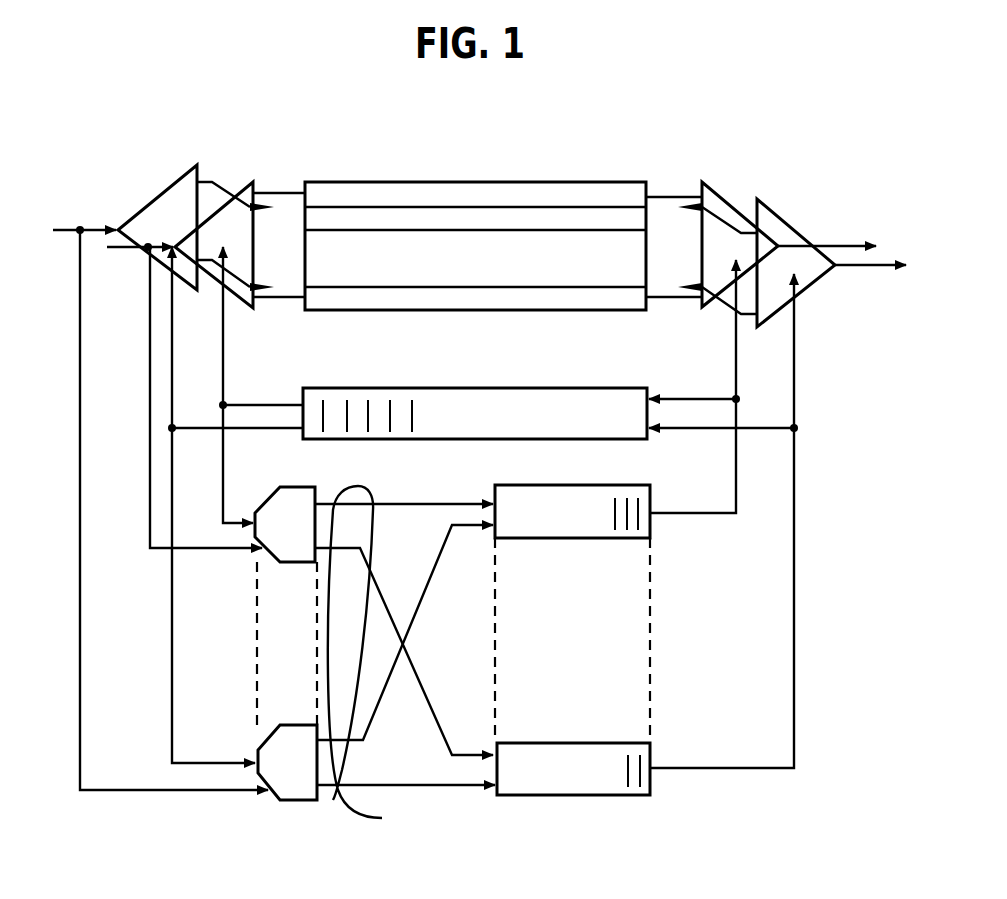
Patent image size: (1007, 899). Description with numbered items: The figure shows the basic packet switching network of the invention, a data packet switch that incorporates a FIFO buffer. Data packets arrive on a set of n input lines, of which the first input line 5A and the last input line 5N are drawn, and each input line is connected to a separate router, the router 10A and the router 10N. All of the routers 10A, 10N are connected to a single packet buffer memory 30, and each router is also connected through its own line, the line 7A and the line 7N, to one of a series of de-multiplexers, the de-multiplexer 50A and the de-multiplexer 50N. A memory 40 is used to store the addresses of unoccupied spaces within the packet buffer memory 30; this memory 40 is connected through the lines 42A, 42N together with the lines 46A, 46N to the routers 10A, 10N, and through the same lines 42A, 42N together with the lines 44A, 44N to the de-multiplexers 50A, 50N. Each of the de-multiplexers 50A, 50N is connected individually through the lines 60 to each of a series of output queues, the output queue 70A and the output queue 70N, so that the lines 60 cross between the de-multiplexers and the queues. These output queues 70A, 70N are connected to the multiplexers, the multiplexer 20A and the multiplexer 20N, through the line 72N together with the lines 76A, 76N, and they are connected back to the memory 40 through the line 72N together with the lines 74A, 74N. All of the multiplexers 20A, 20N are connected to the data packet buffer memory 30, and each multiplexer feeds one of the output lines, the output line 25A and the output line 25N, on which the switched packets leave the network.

The input line 5N is at (71, 228).
The input line 5A is at (112, 248).
The line 7N is at (83, 762).
The line 7A is at (150, 478).
The router 10N is at (177, 182).
The router 10A is at (255, 186).
The packet buffer memory 30 is at (542, 181).
The multiplexer 20A is at (723, 192).
The multiplexer 20N is at (793, 225).
The output line 25A is at (845, 245).
The output line 25N is at (866, 267).
The memory 40 is at (541, 388).
The line 42A is at (280, 402).
The line 42N is at (288, 431).
The line 44A is at (231, 528).
The line 44N is at (177, 747).
The line 46A is at (172, 365).
The line 46N is at (225, 392).
The de-multiplexer 50A is at (308, 487).
The de-multiplexer 50N is at (288, 725).
The lines 60 is at (405, 660).
The output queue 70A is at (597, 485).
The output queue 70N is at (603, 797).
The line 72N is at (797, 676).
The line 74A is at (685, 376).
The line 74N is at (692, 428).
The line 76A is at (736, 340).
The line 76N is at (795, 412).